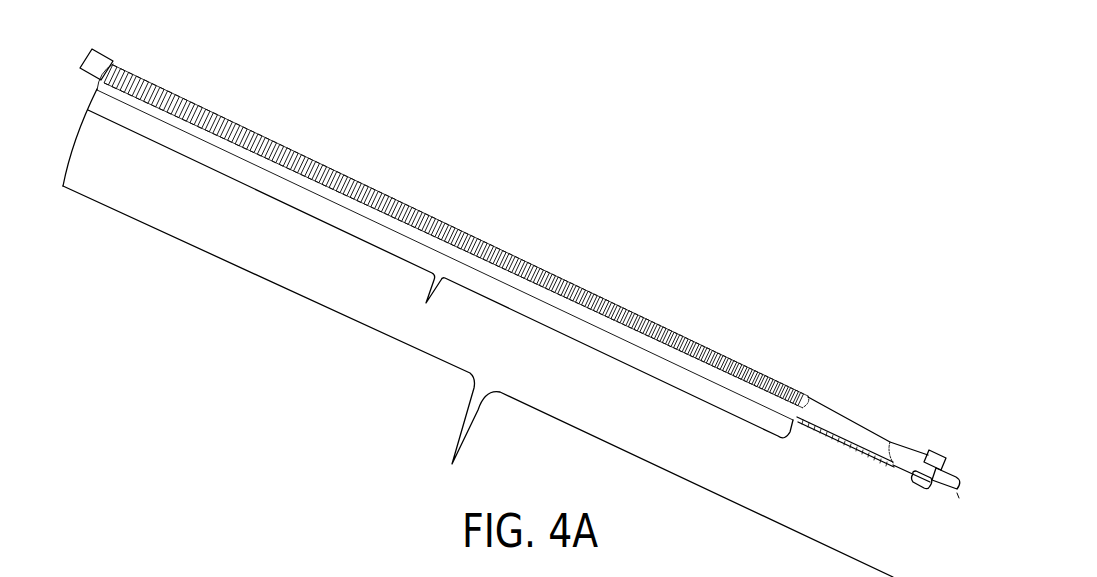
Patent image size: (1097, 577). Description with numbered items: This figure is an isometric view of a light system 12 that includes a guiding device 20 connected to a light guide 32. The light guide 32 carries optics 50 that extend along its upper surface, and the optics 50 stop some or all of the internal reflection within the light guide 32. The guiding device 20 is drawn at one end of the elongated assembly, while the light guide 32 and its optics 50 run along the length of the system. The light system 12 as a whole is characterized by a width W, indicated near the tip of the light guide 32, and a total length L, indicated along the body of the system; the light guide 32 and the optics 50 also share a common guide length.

The light system 12 is at (568, 153).
The guiding device 20 is at (872, 392).
The light guide 32 is at (120, 73).
The optics 50 is at (581, 297).
The width W is at (85, 60).
The total length L is at (427, 484).